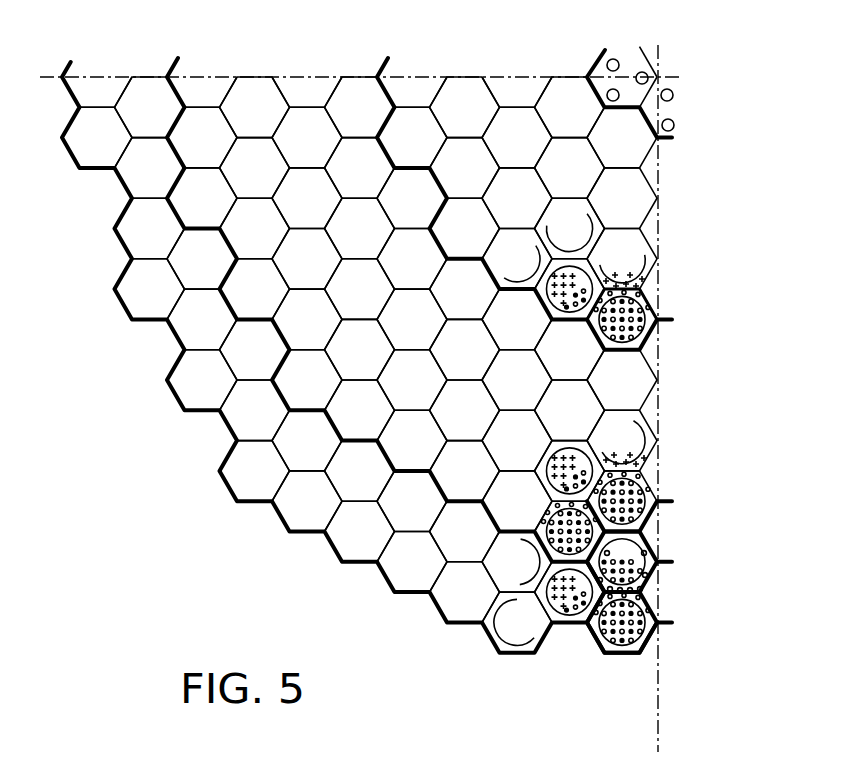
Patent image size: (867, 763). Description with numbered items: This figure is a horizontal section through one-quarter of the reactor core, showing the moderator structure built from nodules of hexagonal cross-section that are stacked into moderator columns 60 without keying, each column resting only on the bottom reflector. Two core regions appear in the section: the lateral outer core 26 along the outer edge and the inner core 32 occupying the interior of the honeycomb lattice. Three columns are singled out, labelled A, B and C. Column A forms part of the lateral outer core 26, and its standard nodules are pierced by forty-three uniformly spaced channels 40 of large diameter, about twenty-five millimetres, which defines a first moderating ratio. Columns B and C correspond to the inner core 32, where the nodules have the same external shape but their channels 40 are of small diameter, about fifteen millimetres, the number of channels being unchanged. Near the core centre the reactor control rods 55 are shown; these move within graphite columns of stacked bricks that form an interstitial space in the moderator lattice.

The lateral outer core region 26 is at (166, 52).
The inner core region 32 is at (553, 53).
The reactor control rods 55 is at (595, 64).
The moderator columns 60 is at (660, 514).
The channels 40 is at (641, 589).
The column C is at (650, 291).
The column B is at (648, 478).
The column A is at (632, 657).